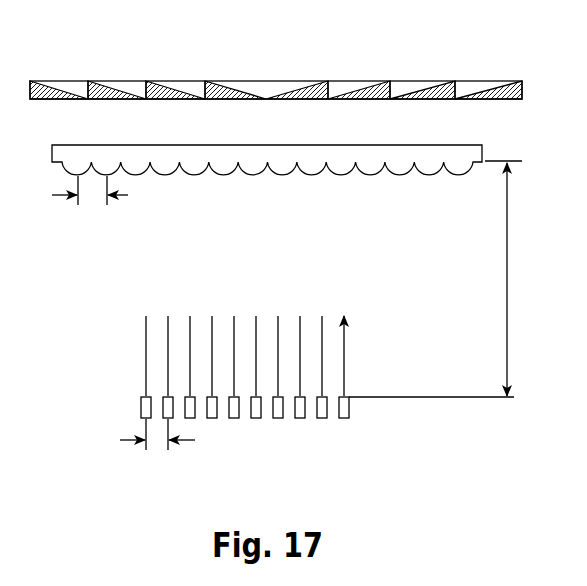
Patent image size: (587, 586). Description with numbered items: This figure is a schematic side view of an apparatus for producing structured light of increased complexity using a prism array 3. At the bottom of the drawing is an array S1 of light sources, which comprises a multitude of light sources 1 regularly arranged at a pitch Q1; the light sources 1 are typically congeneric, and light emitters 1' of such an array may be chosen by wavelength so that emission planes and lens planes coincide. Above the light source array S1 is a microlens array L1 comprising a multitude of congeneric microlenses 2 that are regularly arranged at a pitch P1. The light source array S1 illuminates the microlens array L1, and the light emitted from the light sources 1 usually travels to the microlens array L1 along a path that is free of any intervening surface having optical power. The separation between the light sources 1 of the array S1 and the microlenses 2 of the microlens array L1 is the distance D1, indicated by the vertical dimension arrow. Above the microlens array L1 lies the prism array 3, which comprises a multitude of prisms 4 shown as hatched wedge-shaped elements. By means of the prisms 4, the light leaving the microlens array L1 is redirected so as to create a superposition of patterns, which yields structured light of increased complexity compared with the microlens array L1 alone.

The prism array 3 is at (479, 61).
The prisms 4 is at (276, 58).
The microlens array L1 is at (491, 143).
The microlenses 2 is at (282, 211).
The pitch of the microlenses P1 is at (90, 211).
The distance between the light source array and the microlens array D1 is at (435, 279).
The light emitter 1' is at (492, 233).
The array of light sources S1 is at (103, 359).
The light sources 1 is at (245, 445).
The pitch of the light sources Q1 is at (157, 459).